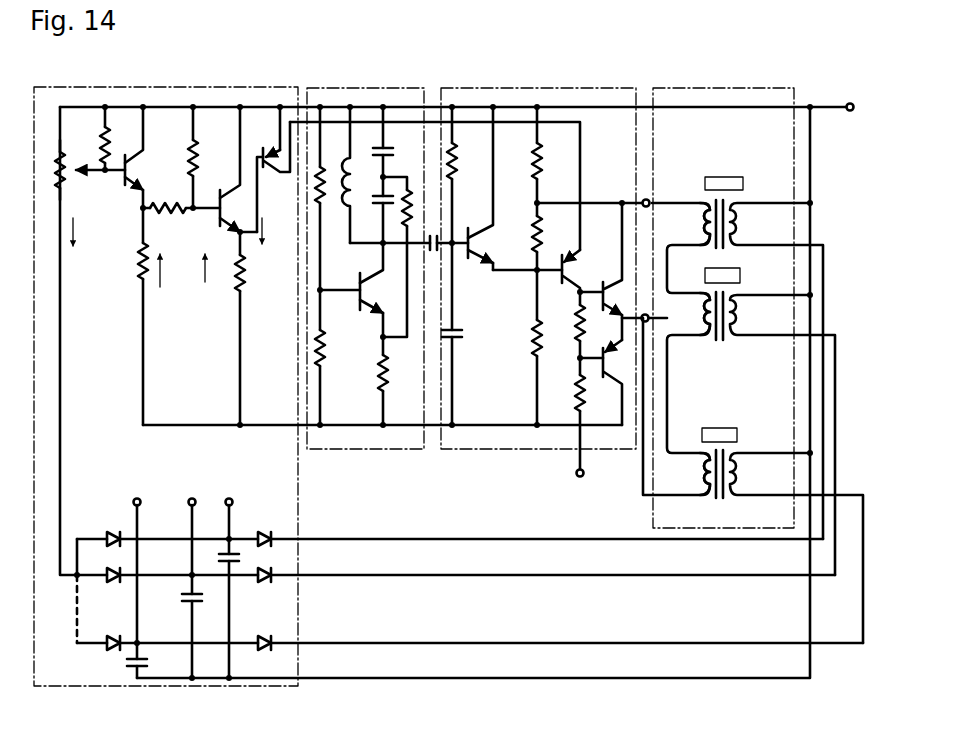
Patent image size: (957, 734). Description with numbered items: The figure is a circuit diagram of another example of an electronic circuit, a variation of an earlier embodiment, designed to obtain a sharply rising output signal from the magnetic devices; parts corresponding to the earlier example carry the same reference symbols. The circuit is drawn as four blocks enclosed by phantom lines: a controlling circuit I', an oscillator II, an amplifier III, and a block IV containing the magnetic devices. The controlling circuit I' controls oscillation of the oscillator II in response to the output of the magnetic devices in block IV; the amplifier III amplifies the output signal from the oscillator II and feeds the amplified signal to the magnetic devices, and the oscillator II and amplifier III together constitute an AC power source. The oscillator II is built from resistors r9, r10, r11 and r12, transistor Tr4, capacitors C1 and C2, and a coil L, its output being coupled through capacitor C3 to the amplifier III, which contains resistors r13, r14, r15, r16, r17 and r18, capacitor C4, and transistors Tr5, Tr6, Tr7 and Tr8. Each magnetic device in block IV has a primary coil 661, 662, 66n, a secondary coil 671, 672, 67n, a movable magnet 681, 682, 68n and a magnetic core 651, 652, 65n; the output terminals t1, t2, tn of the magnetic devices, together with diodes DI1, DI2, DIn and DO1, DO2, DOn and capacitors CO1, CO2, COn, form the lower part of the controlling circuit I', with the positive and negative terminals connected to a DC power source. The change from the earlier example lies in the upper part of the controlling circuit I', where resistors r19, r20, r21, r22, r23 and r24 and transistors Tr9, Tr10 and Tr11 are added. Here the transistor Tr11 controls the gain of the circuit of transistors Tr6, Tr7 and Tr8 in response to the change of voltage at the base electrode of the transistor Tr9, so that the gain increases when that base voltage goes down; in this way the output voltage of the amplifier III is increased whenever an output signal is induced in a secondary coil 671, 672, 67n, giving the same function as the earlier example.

The controlling circuit I' is at (166, 345).
The oscillator II is at (357, 88).
The amplifier III is at (532, 88).
The magnetic devices block IV is at (713, 87).
The resistor r9 is at (322, 205).
The resistor r10 is at (333, 352).
The resistor r11 is at (416, 205).
The resistor r12 is at (389, 375).
The resistor r13 is at (455, 162).
The resistor r14 is at (540, 162).
The resistor r15 is at (540, 226).
The resistor r16 is at (542, 352).
The resistor r17 is at (581, 322).
The resistor r18 is at (586, 400).
The resistor r19 is at (68, 182).
The resistor r20 is at (104, 137).
The resistor r21 is at (139, 271).
The resistor r22 is at (164, 212).
The resistor r23 is at (199, 156).
The resistor r24 is at (253, 275).
The transistor Tr4 is at (369, 291).
The transistor Tr5 is at (489, 254).
The transistor Tr6 is at (573, 270).
The transistor Tr7 is at (617, 288).
The transistor Tr8 is at (607, 366).
The transistor Tr9 is at (145, 157).
The transistor Tr10 is at (222, 214).
The transistor Tr11 is at (262, 176).
The capacitor C1 is at (390, 151).
The capacitor C2 is at (380, 207).
The capacitor C3 is at (438, 256).
The capacitor C4 is at (464, 333).
The inductor L is at (356, 187).
The output terminal tn is at (136, 498).
The output terminal t2 is at (191, 498).
The output terminal t1 is at (228, 498).
The diode DI1 is at (110, 533).
The diode DI2 is at (110, 569).
The diode DIn is at (110, 638).
The diode DO1 is at (263, 531).
The diode DO2 is at (263, 586).
The diode DOn is at (269, 633).
The capacitor CO1 is at (218, 558).
The capacitor CO2 is at (182, 596).
The capacitor COn is at (154, 667).
The magnetic core 651 is at (736, 199).
The magnetic core 652 is at (734, 294).
The magnetic core 65n is at (736, 454).
The primary coil 661 is at (694, 225).
The primary coil 662 is at (698, 317).
The primary coil 66n is at (698, 479).
The secondary coil 671 is at (745, 227).
The secondary coil 672 is at (744, 315).
The secondary coil 67n is at (745, 477).
The movable magnet 681 is at (733, 177).
The movable magnet 682 is at (735, 268).
The movable magnet 68n is at (730, 432).